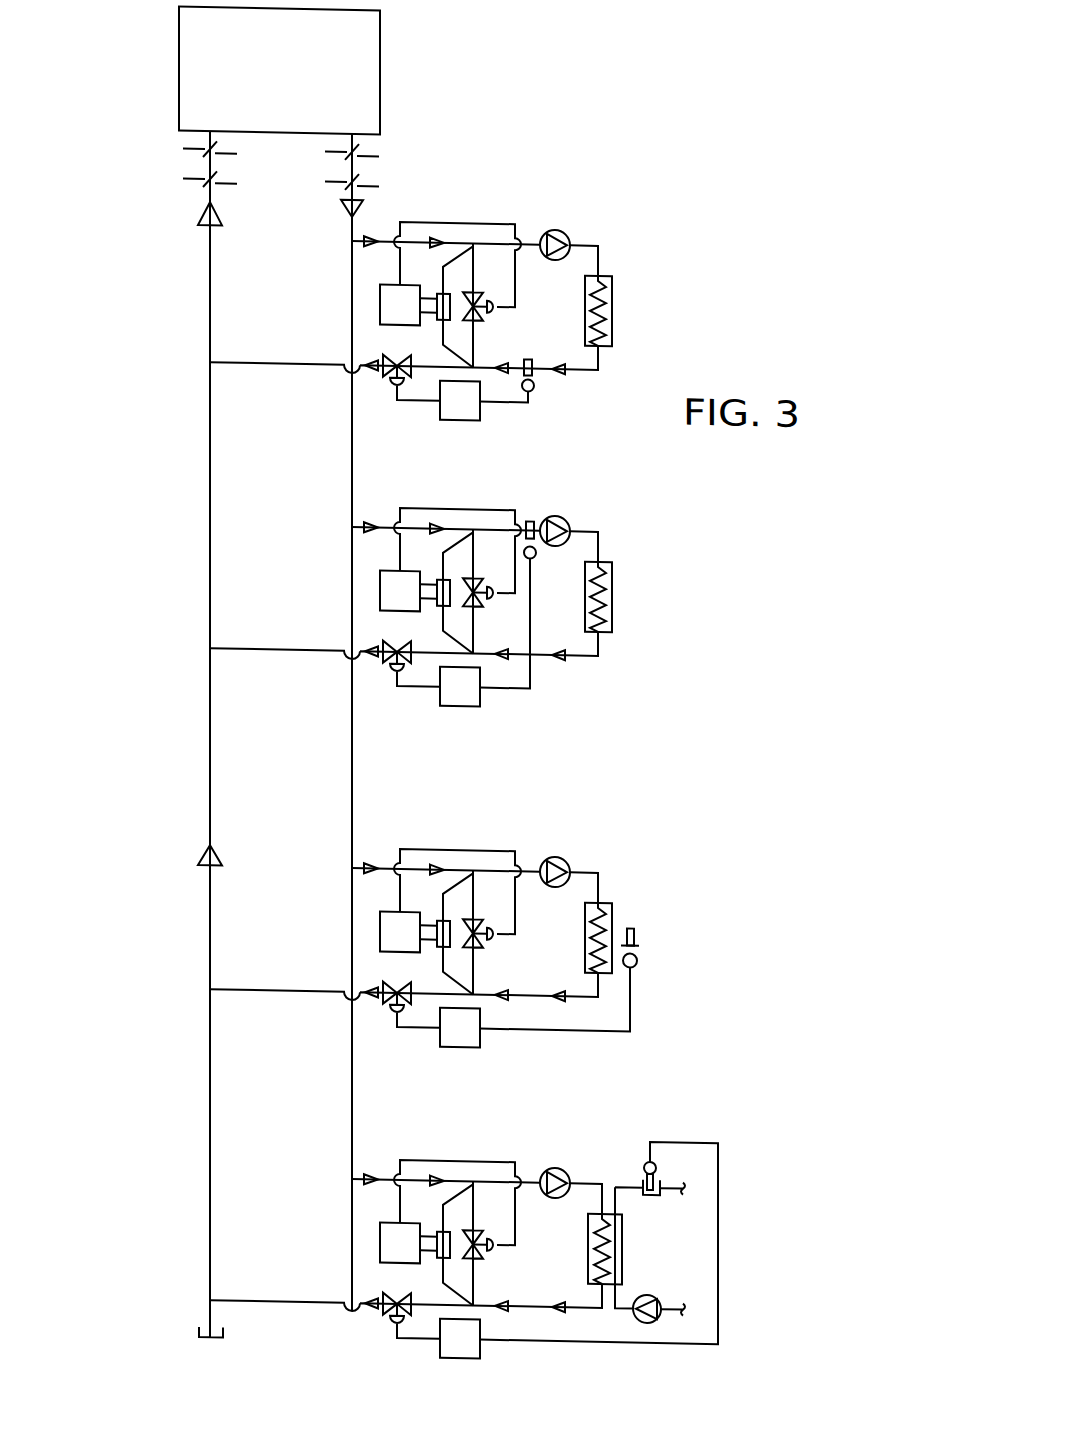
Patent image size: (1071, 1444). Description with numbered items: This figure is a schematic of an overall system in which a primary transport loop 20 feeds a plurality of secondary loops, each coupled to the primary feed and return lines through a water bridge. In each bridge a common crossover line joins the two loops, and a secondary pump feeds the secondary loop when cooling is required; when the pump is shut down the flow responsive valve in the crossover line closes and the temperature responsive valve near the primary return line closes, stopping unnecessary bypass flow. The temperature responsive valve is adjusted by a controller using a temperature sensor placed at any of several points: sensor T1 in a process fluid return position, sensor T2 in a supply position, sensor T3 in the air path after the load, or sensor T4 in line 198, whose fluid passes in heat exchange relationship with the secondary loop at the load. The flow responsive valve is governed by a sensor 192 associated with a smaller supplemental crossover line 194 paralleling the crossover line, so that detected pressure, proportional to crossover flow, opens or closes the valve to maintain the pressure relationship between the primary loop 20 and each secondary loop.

The primary transport loop 20 is at (185, 346).
The sensor 192 is at (437, 290).
The supplemental crossover line 194 is at (452, 285).
The line 198 is at (599, 1222).
The temperature sensor T1 is at (530, 389).
The temperature sensor T2 is at (548, 583).
The temperature sensor T3 is at (586, 974).
The temperature sensor T4 is at (704, 1189).